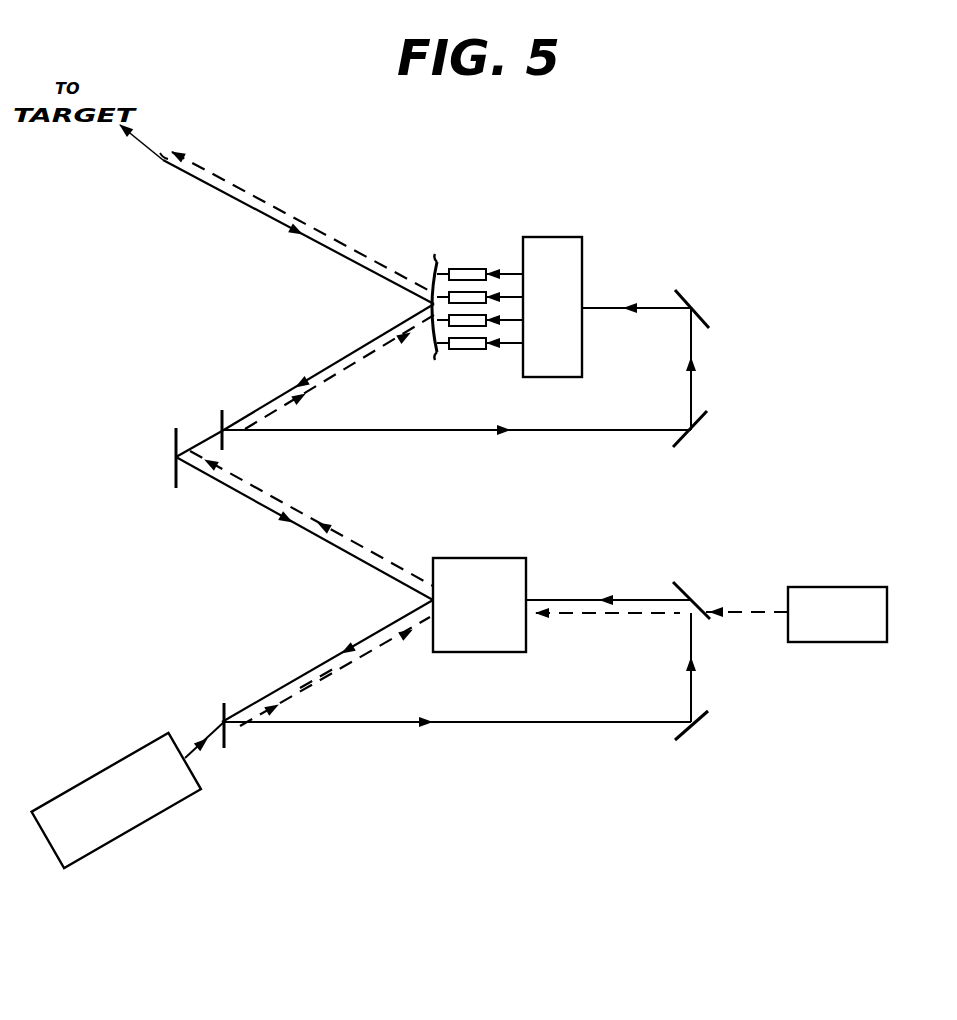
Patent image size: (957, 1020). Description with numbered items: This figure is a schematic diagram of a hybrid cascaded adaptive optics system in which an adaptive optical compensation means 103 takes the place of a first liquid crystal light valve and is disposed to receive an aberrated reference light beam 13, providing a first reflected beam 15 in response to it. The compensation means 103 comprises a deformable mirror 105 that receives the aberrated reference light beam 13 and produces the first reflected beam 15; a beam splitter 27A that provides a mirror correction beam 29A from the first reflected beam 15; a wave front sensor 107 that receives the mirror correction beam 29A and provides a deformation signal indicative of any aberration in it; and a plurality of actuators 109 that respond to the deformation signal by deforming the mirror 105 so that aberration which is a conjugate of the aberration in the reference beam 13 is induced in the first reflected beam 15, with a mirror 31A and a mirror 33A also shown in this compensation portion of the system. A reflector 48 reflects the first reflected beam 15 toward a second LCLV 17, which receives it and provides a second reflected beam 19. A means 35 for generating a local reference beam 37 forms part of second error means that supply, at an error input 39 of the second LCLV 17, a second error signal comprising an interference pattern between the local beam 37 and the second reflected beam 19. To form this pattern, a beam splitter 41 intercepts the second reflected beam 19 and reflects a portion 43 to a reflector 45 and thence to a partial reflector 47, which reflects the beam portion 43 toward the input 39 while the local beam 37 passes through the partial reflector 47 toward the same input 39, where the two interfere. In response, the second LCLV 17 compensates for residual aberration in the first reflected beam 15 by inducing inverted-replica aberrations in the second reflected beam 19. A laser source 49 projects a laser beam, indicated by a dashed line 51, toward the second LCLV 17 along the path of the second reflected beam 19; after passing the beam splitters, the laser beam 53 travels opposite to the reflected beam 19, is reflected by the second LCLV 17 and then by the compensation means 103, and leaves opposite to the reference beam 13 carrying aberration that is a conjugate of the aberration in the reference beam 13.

The aberrated reference light beam 13 is at (270, 216).
The first reflected beam 15 is at (332, 384).
The second LCLV 17 is at (506, 558).
The second reflected beam 19 is at (313, 672).
The beam splitter 27A is at (222, 418).
The mirror correction beam 29A is at (563, 431).
The mirror 31A is at (704, 428).
The mirror 33A is at (709, 312).
The means for generating a local reference beam 35 is at (887, 624).
The local reference beam 37 is at (746, 614).
The error input 39 is at (532, 590).
The beam splitter 41 is at (224, 712).
The beam portion 43 is at (445, 725).
The reflector 45 is at (680, 731).
The partial reflector 47 is at (690, 594).
The reflector 48 is at (176, 474).
The laser source 49 is at (137, 825).
The dashed line 51 is at (197, 754).
The laser beam 53 is at (350, 661).
The adaptive optical compensation means 103 is at (472, 233).
The deformable mirror 105 is at (430, 346).
The wave front sensor 107 is at (583, 262).
The actuators 109 is at (463, 296).